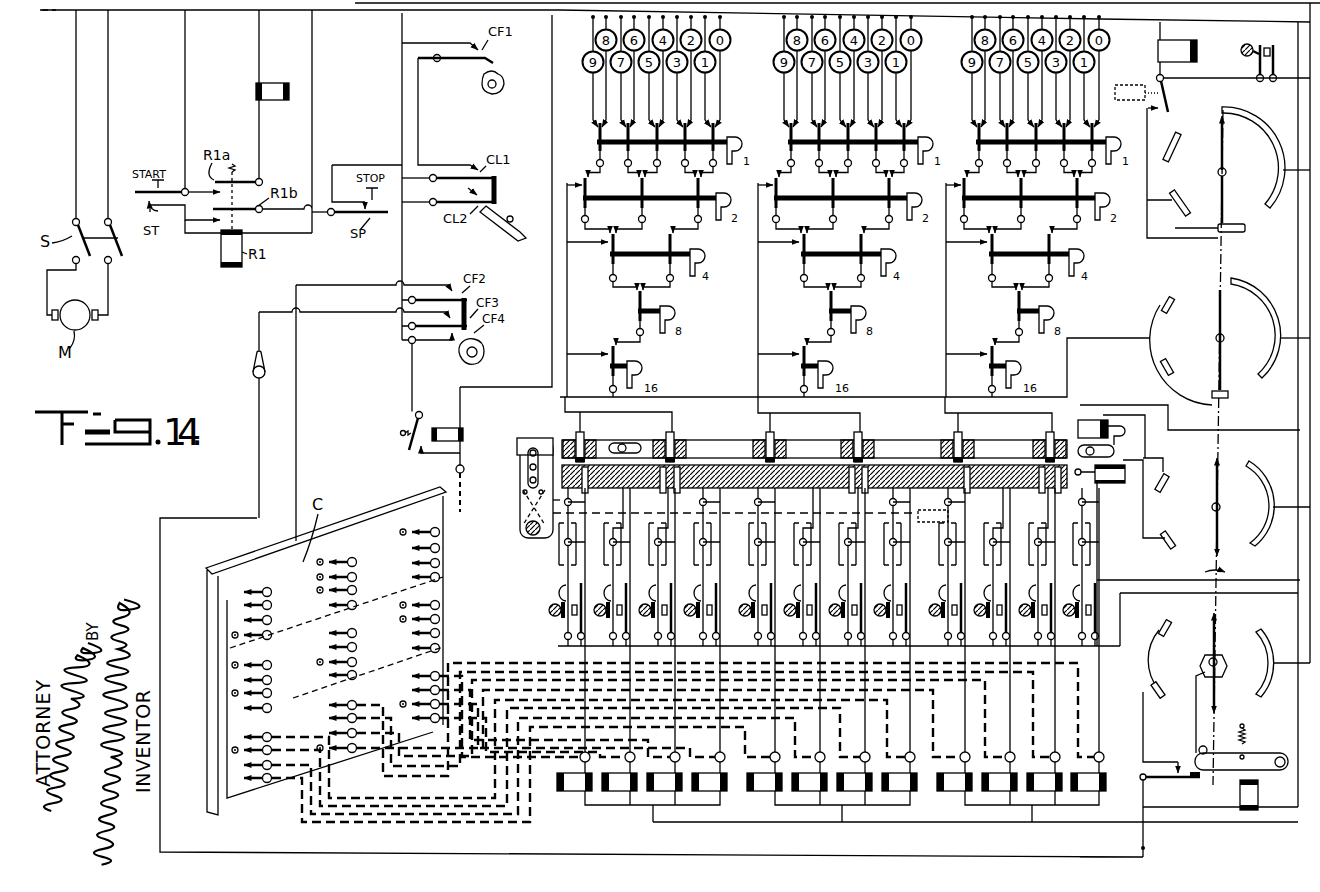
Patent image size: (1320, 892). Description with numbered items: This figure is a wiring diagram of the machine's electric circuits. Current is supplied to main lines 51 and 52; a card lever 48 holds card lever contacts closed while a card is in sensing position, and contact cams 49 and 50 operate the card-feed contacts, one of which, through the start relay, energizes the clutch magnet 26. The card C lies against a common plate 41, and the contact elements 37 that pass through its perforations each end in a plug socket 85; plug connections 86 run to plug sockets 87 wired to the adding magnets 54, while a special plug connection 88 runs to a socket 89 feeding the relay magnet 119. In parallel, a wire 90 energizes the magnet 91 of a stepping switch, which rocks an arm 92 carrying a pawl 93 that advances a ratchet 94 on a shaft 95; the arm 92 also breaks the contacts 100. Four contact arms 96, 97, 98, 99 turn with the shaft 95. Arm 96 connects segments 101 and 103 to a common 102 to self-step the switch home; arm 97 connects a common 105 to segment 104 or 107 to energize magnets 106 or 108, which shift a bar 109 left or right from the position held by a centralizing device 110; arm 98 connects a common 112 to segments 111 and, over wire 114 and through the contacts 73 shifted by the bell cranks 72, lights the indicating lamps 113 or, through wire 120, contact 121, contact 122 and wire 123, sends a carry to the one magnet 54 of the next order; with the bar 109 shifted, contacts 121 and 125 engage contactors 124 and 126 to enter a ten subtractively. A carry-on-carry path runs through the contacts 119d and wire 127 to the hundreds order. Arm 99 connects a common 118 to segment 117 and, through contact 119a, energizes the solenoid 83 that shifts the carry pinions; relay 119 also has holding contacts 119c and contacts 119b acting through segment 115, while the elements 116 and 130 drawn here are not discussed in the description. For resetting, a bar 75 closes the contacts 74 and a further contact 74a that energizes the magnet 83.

The clutch magnet 26 is at (267, 82).
The contact elements 37 is at (244, 615).
The common plate 41 is at (222, 560).
The card lever 48 is at (508, 206).
The contact cam 49 is at (506, 83).
The contact cam 50 is at (486, 354).
The main line 51 is at (150, 6).
The main line 52 is at (168, 10).
The adding magnets 54 is at (712, 792).
The bell cranks 72 is at (670, 304).
The contacts 73 is at (598, 146).
The contacts 74 is at (612, 606).
The further contact 74a is at (1278, 60).
The bar 75 is at (551, 608).
The solenoid 83 is at (1190, 50).
The plug socket 85 is at (440, 562).
The plug connections 86 is at (378, 824).
The plug sockets 87 is at (610, 748).
The special plug connection 88 is at (465, 502).
The plug socket 89 is at (465, 467).
The wire 90 is at (256, 440).
The magnet 91 is at (1238, 798).
The arm 92 is at (1256, 750).
The pawl 93 is at (1194, 738).
The ratchet 94 is at (1225, 663).
The shaft 95 is at (1227, 569).
The contact arm 96 is at (1212, 608).
The contact arm 97 is at (1212, 482).
The contact arm 98 is at (1215, 324).
The contact arm 99 is at (1220, 146).
The contacts 100 is at (1162, 780).
The segment 101 is at (1148, 690).
The common 102 is at (1262, 690).
The segment 103 is at (1170, 626).
The segment 104 is at (1162, 548).
The common 105 is at (1272, 474).
The magnet 106 is at (1098, 420).
The segment 107 is at (1165, 476).
The magnet 108 is at (1102, 484).
The bar 109 is at (930, 440).
The centralizing device 110 is at (520, 530).
The segment 111 is at (1212, 392).
The common 112 is at (1262, 290).
The indicating lamps 113 is at (712, 60).
The wire 114 is at (685, 394).
The segment 115 is at (1215, 228).
The contact segment 116 is at (1177, 198).
The segment 117 is at (1178, 134).
The common 118 is at (1262, 132).
The relay magnet 119 is at (433, 426).
The contact 119a is at (1170, 102).
The contacts 119b is at (1150, 106).
The contacts 119c is at (416, 452).
The contacts 119d is at (562, 546).
The wire 120 is at (940, 372).
The contact 121 is at (862, 436).
The contact 122 is at (1042, 493).
The wire 123 is at (912, 560).
The contactor 124 is at (1058, 493).
The second contact 125 is at (776, 446).
The contactor 126 is at (967, 493).
The wire 127 is at (730, 608).
The contact segment 130 is at (1298, 594).